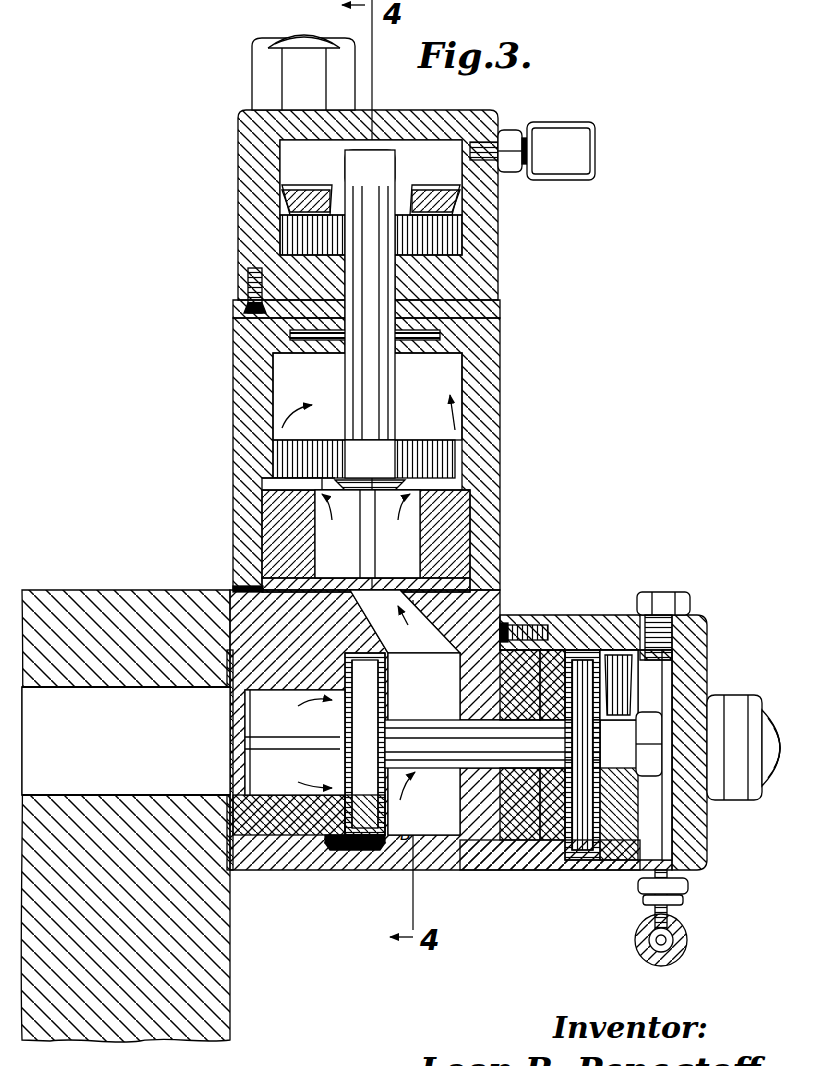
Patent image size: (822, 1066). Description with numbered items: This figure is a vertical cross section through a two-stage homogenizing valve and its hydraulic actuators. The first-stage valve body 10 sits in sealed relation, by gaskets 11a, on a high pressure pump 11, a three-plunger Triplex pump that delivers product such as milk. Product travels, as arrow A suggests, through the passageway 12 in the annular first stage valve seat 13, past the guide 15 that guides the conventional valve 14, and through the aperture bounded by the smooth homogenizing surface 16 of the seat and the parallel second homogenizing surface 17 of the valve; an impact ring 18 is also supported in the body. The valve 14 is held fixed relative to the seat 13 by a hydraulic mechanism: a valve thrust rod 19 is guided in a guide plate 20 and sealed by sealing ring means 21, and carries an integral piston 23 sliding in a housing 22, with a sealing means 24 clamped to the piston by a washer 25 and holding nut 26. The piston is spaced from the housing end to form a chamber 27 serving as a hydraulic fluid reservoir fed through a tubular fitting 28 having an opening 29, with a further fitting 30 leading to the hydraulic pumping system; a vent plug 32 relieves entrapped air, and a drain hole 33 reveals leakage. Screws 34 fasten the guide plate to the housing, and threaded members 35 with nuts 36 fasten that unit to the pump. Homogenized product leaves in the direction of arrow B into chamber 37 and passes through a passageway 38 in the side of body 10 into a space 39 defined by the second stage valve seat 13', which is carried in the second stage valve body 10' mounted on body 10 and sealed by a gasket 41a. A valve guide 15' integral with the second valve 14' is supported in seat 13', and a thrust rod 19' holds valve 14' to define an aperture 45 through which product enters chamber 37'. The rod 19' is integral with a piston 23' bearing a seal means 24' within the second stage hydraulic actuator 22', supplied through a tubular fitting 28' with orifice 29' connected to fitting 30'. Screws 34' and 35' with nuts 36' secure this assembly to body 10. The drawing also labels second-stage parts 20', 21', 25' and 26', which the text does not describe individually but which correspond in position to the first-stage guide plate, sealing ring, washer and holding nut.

The valve body 10 is at (451, 750).
The second stage valve body 10' is at (385, 455).
The high pressure pump 11 is at (76, 1032).
The gaskets 11a is at (232, 870).
The passageway 12 is at (242, 790).
The first stage valve seat 13 is at (288, 852).
The second stage valve seat 13' is at (402, 534).
The valve 14 is at (365, 782).
The valve 14' is at (364, 456).
The guide 15 is at (266, 773).
The valve guide 15' is at (367, 534).
The homogenizing surface 16 is at (344, 858).
The second homogenizing surface 17 is at (352, 858).
The impact ring 18 is at (332, 862).
The valve thrust rod 19 is at (492, 765).
The thrust rod 19' is at (389, 295).
The guide plate 20 is at (550, 873).
The ring flange 20' is at (393, 307).
The sealing ring means 21 is at (550, 712).
The plate 21' is at (319, 349).
The housing 22 is at (603, 718).
The second stage hydraulic actuator 22' is at (395, 205).
The piston 23 is at (581, 779).
The piston 23' is at (415, 234).
The sealing means 24 is at (615, 779).
The seal means 24' is at (328, 215).
The washer 25 is at (632, 685).
The cup 25' is at (371, 177).
The holding nut 26 is at (650, 733).
The nut 26' is at (394, 132).
The chamber 27 is at (668, 822).
The tubular fitting 28 is at (689, 887).
The tubular fitting 28' is at (515, 130).
The opening 29 is at (692, 905).
The orifice 29' is at (563, 131).
The fitting 30 is at (683, 918).
The fitting 30' is at (581, 151).
The vent plug 32 is at (660, 600).
The drain hole 33 is at (556, 870).
The screws 34 is at (529, 613).
The screws 34' is at (225, 290).
The threaded members 35 is at (779, 739).
The screws 35' is at (304, 27).
The nuts 36 is at (734, 736).
The nuts 36' is at (279, 74).
The chamber 37 is at (424, 744).
The chamber 37' is at (327, 396).
The passageway 38 is at (405, 621).
The space 39 is at (455, 584).
The gasket 41a is at (252, 589).
The aperture 45 is at (268, 493).